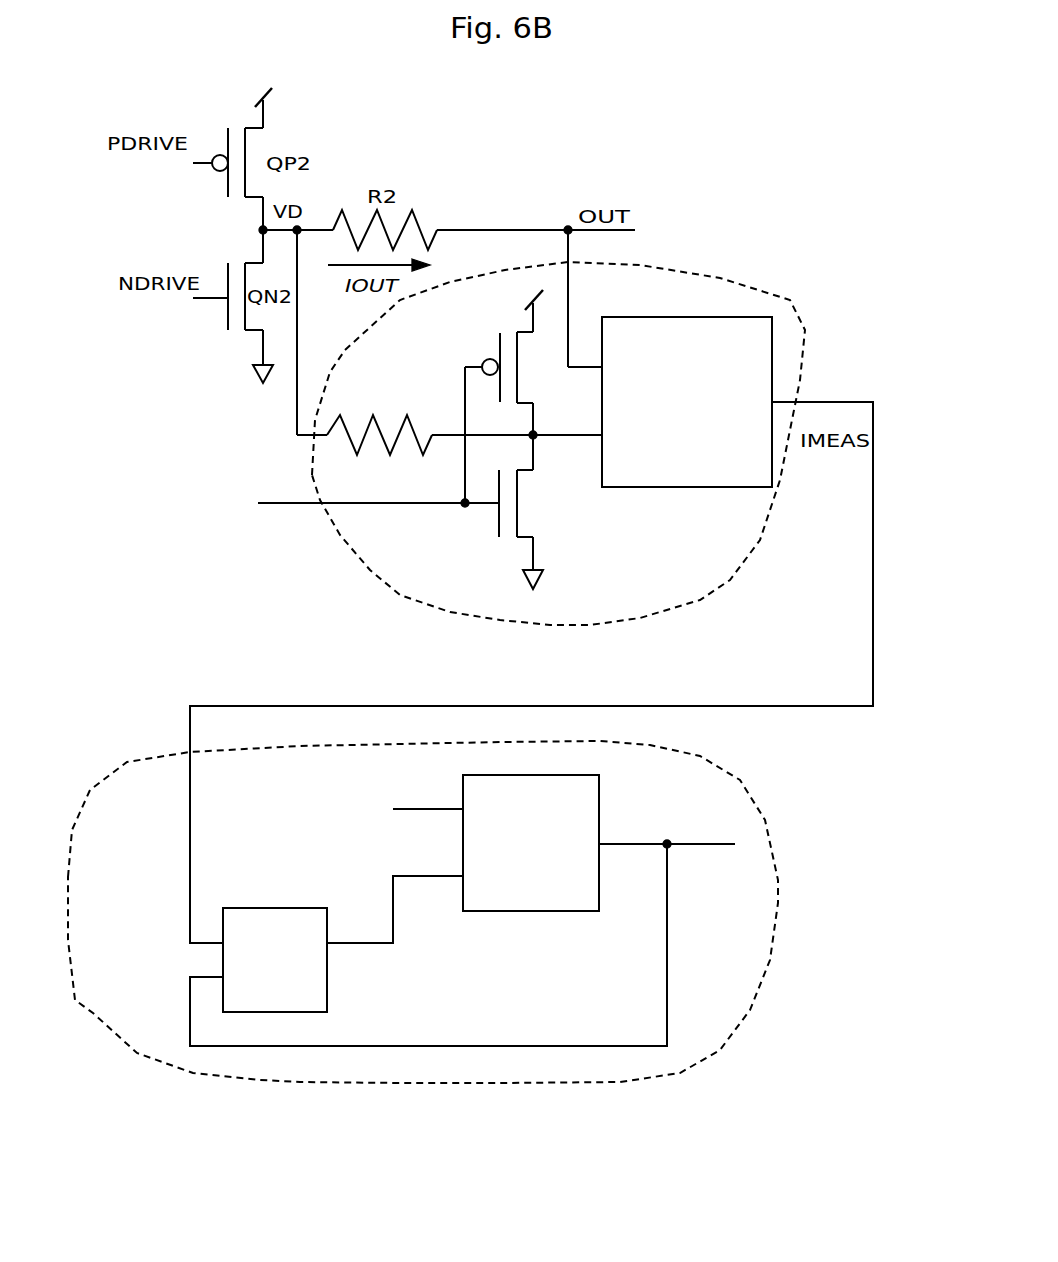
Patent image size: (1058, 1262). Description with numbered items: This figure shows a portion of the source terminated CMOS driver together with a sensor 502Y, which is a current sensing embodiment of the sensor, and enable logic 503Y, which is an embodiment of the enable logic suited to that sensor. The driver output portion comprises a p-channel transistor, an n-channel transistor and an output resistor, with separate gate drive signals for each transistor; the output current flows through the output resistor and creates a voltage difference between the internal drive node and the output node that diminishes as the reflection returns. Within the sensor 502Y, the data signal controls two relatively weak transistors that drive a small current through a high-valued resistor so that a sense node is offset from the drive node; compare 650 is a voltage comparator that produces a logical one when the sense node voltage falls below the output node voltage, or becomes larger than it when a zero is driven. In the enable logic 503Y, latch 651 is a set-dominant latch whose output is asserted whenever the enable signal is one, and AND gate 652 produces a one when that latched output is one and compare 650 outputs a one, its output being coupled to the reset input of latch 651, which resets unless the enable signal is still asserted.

The compare 650 is at (617, 487).
The latch 651 is at (499, 911).
The AND gate 652 is at (241, 908).
The sensor 502Y is at (501, 467).
The enable logic 503Y is at (438, 912).